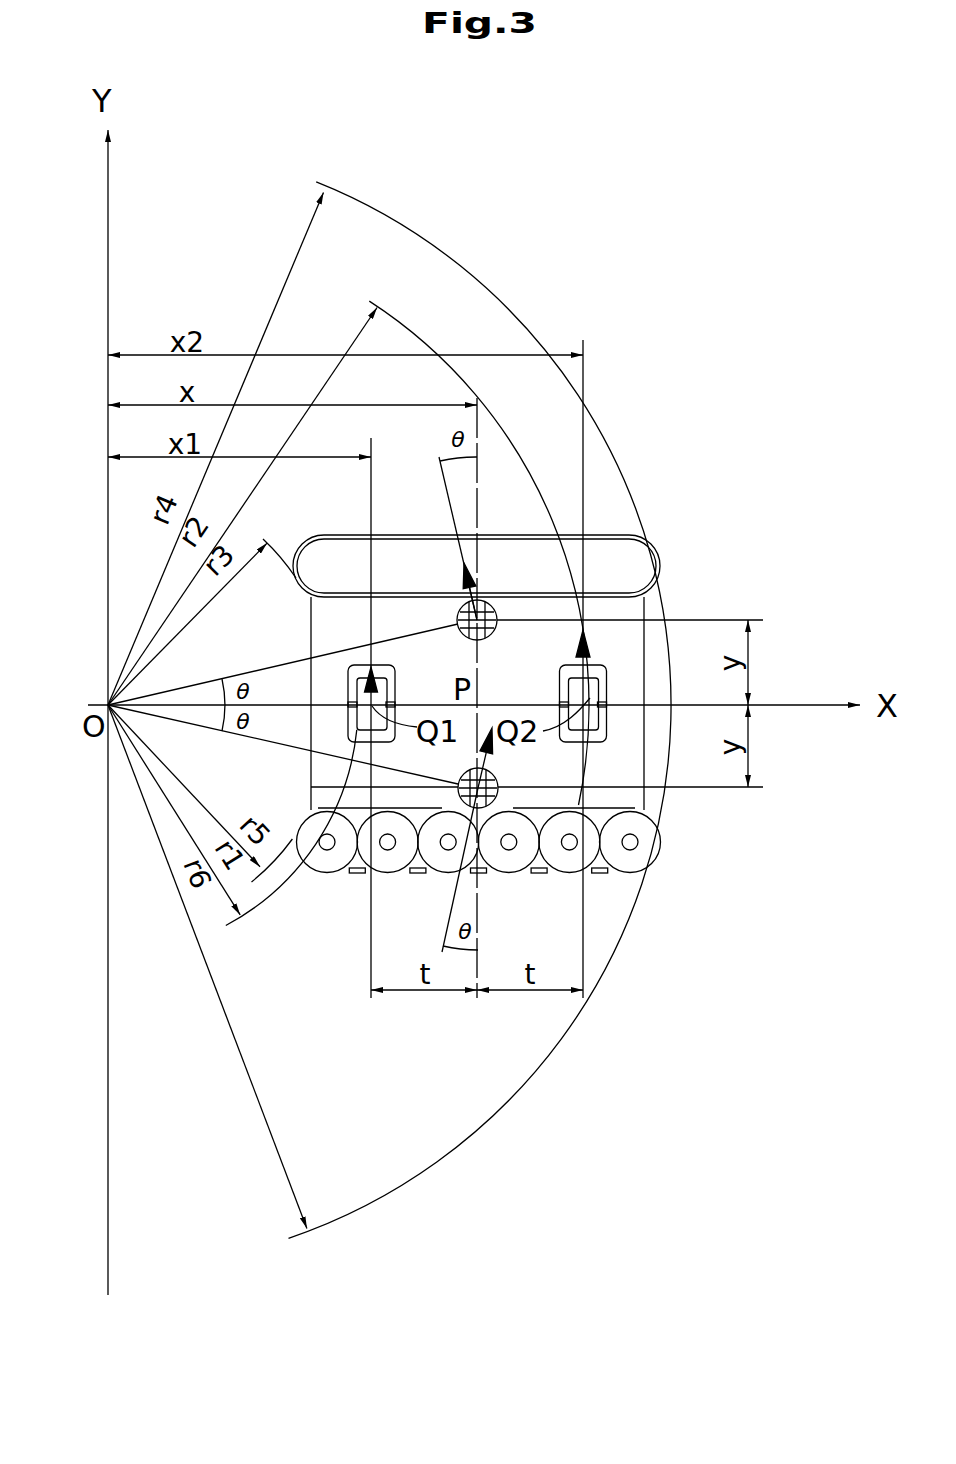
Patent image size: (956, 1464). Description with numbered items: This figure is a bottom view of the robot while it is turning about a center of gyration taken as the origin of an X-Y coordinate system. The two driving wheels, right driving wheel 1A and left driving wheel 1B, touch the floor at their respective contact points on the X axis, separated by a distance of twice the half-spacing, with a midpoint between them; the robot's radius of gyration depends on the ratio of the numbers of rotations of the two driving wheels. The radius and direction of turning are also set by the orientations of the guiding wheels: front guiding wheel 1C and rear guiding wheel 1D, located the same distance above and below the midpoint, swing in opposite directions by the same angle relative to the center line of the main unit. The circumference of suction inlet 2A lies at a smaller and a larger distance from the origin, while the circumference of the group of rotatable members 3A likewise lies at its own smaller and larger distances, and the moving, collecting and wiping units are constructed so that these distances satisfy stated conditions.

The right driving wheel 1A is at (365, 698).
The left driving wheel 1B is at (593, 697).
The front guiding wheel 1C is at (483, 600).
The rear guiding wheel 1D is at (487, 807).
The suction inlet 2A is at (620, 548).
The group of rotatable members 3A is at (632, 860).